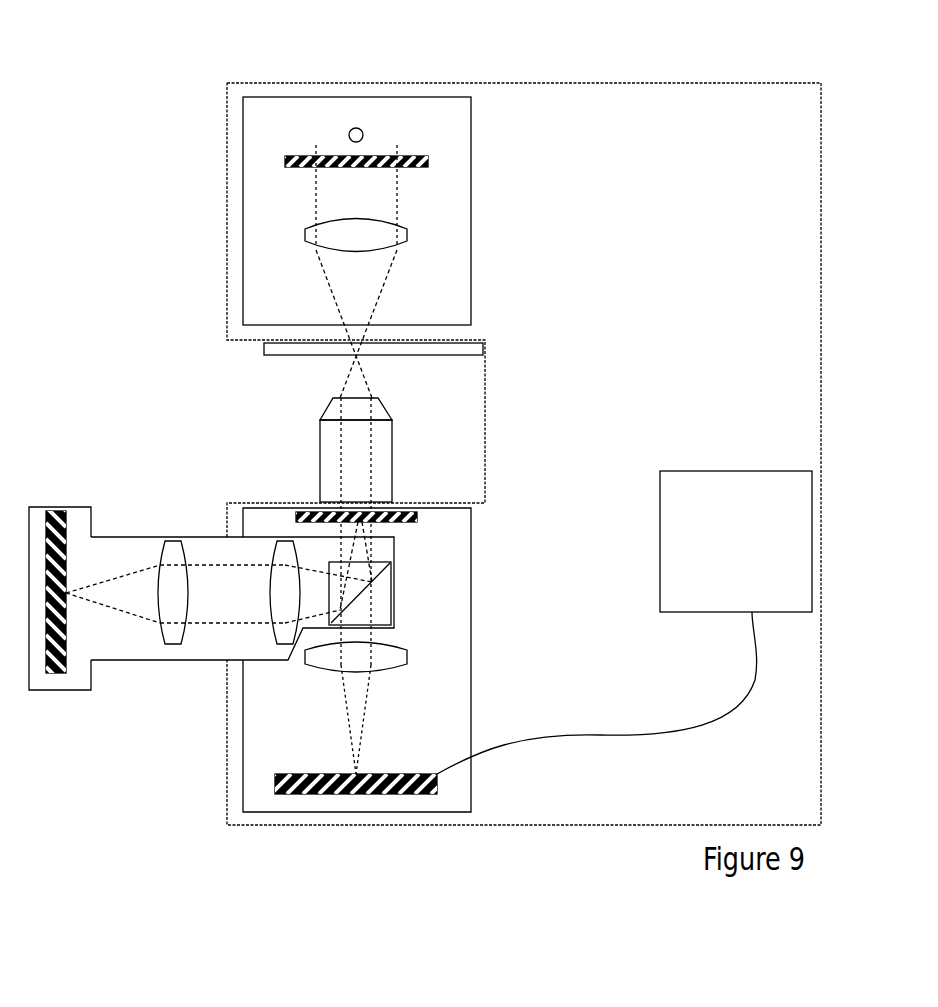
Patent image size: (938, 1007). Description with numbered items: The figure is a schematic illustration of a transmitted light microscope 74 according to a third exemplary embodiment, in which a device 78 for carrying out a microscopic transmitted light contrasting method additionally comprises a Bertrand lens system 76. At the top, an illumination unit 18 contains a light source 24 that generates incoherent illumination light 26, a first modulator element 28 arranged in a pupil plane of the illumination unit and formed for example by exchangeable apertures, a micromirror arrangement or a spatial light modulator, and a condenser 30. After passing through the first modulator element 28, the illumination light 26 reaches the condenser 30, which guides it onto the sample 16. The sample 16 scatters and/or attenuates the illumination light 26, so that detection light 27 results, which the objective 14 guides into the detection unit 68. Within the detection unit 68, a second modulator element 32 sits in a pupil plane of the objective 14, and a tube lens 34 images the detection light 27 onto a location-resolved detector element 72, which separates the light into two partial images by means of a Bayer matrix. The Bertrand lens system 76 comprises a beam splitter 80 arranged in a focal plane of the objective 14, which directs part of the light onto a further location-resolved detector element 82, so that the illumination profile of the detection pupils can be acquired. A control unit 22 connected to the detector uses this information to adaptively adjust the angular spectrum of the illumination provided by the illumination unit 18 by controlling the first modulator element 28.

The objective 14 is at (392, 457).
The sample 16 is at (467, 357).
The illumination unit 18 is at (471, 155).
The control unit 22 is at (660, 583).
The light source 24 is at (364, 133).
The illumination light 26 is at (315, 193).
The detection light 27 is at (367, 384).
The first modulator element 28 is at (428, 158).
The condenser 30 is at (408, 238).
The second modulator element 32 is at (296, 515).
The tube lens 34 is at (400, 647).
The detection unit 68 is at (472, 663).
The location-resolved detector element 72 is at (415, 773).
The transmitted light microscope 74 is at (680, 50).
The Bertrand lens system 76 is at (173, 541).
The device 78 is at (821, 167).
The beam splitter 80 is at (392, 584).
The further location-resolved detector element 82 is at (66, 560).